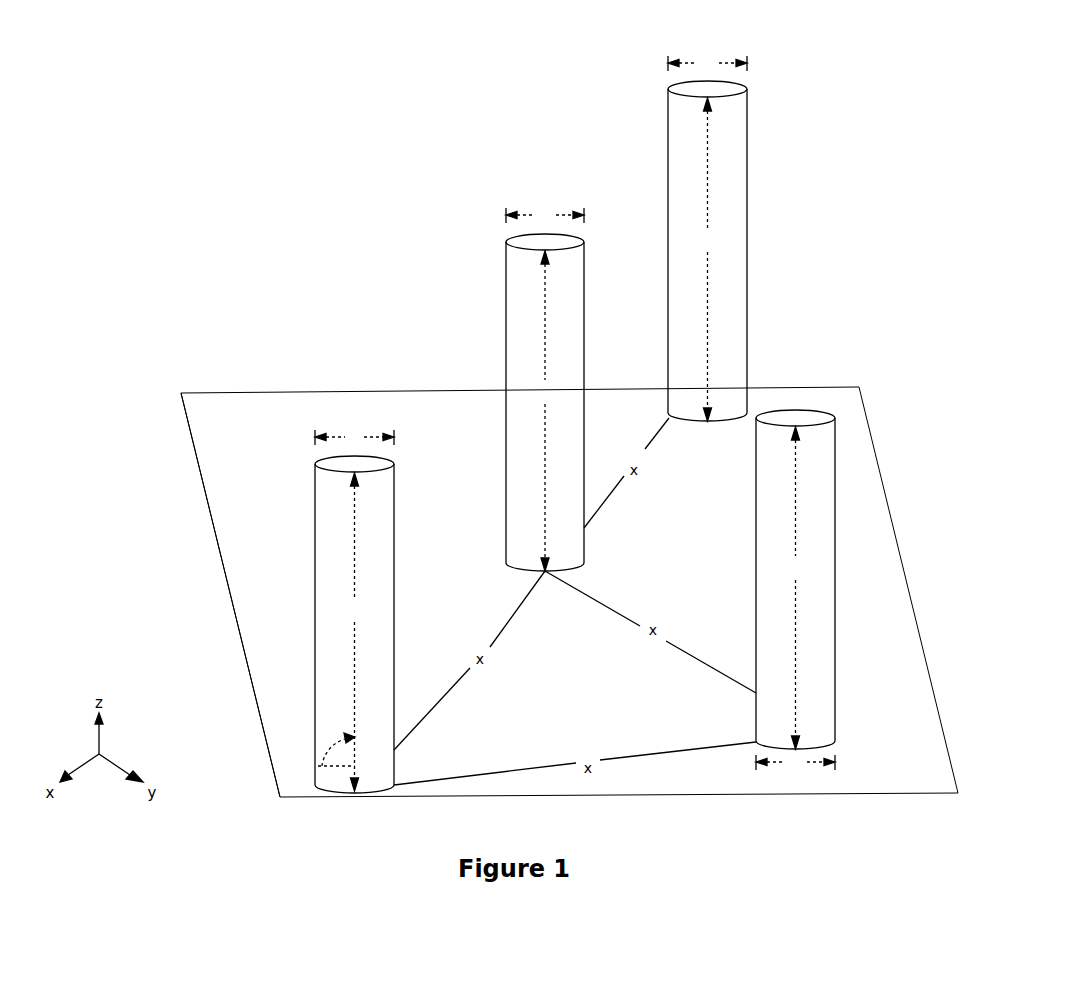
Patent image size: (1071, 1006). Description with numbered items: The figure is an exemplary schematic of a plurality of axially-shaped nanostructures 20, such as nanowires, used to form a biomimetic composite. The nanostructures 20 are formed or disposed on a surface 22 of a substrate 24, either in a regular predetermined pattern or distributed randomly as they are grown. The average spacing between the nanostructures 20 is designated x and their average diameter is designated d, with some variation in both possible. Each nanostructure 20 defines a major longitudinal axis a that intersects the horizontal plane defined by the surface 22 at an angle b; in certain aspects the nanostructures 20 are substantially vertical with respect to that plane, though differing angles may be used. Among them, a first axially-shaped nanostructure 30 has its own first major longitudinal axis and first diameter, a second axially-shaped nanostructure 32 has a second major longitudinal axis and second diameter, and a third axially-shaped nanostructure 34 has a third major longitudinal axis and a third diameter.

The axially-shaped nanostructures 20 is at (316, 465).
The surface 22 is at (280, 428).
The substrate 24 is at (227, 579).
The first axially-shaped nanostructure 30 is at (506, 242).
The second axially-shaped nanostructure 32 is at (836, 420).
The third axially-shaped nanostructure 34 is at (668, 90).